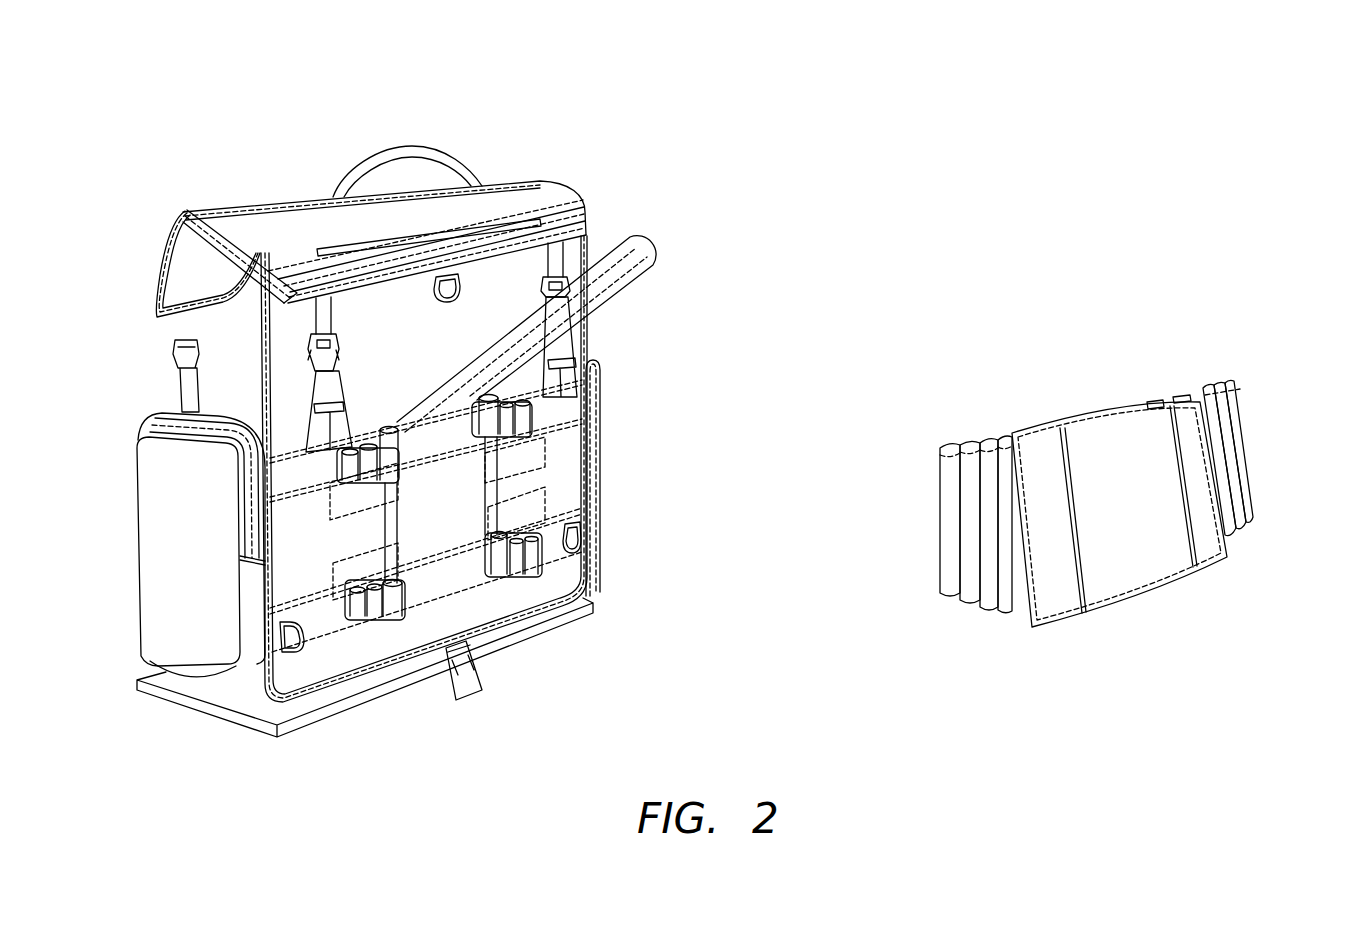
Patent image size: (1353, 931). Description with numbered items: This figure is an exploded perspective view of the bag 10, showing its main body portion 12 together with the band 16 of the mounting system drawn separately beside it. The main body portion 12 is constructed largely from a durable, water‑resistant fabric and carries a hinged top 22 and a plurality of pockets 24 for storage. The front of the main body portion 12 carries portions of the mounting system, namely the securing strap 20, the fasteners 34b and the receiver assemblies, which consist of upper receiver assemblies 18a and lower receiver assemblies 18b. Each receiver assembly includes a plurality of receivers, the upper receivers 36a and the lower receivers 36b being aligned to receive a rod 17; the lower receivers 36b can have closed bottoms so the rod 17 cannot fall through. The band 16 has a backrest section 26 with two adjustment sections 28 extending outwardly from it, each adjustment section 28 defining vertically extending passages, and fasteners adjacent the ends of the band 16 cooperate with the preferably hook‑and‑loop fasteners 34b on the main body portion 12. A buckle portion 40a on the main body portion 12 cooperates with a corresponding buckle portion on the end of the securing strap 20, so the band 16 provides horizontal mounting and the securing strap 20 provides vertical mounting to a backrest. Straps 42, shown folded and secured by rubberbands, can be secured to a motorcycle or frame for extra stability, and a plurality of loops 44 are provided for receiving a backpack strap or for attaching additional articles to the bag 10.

The bag 10 is at (729, 194).
The main body portion 12 is at (567, 127).
The band 16 is at (1181, 318).
The rod 17 is at (498, 497).
The upper receiver assembly 18a is at (470, 420).
The lower receiver assembly 18b is at (537, 590).
The securing strap 20 is at (628, 271).
The hinged top 22 is at (276, 231).
The pockets 24 is at (597, 470).
The backrest section 26 is at (1137, 585).
The adjustment sections 28 is at (1000, 597).
The fasteners 34b is at (525, 520).
The upper receiver 36a is at (387, 466).
The lower receiver 36b is at (500, 572).
The buckle portion 40a is at (468, 683).
The straps 42 is at (330, 392).
The loops 44 is at (462, 293).